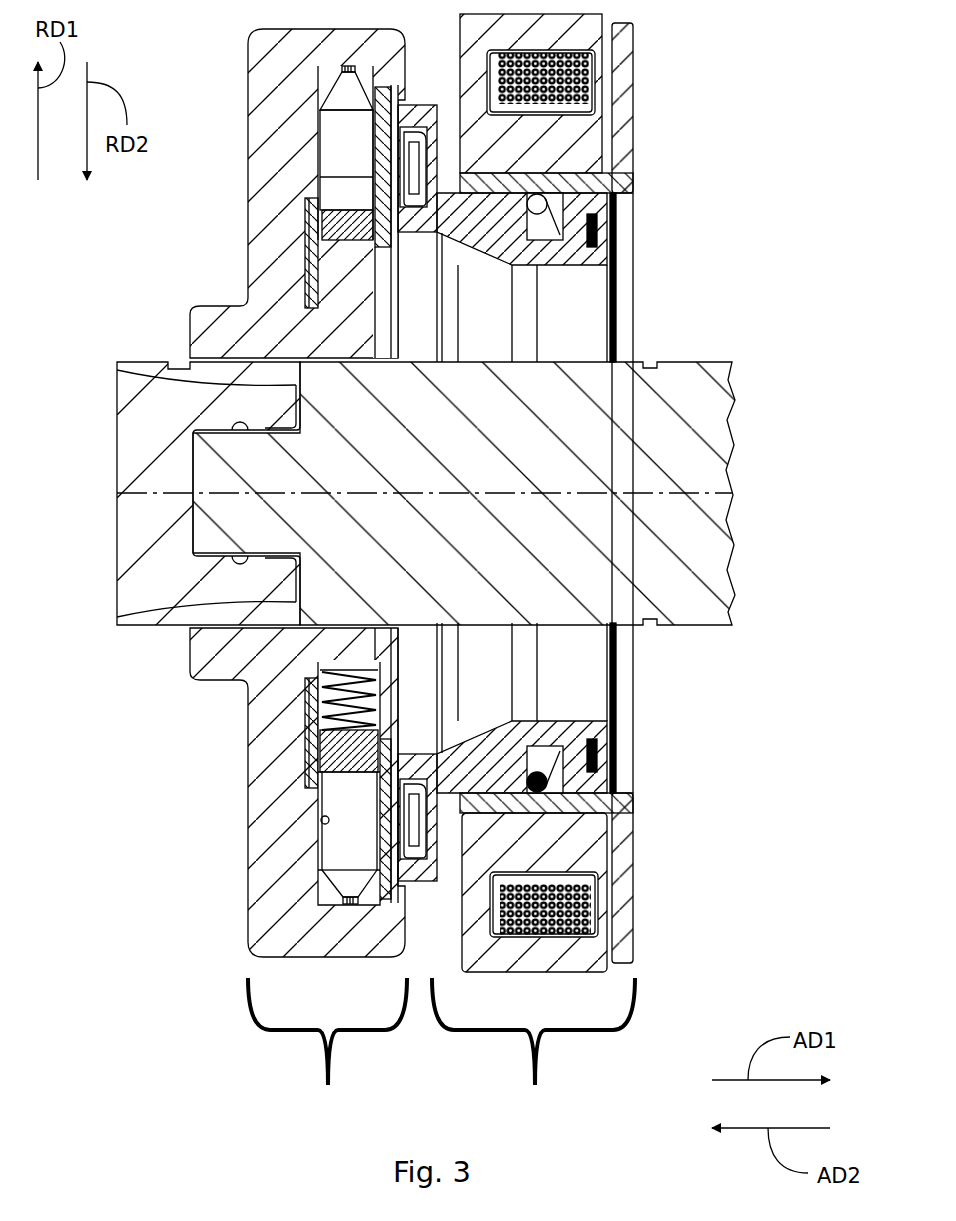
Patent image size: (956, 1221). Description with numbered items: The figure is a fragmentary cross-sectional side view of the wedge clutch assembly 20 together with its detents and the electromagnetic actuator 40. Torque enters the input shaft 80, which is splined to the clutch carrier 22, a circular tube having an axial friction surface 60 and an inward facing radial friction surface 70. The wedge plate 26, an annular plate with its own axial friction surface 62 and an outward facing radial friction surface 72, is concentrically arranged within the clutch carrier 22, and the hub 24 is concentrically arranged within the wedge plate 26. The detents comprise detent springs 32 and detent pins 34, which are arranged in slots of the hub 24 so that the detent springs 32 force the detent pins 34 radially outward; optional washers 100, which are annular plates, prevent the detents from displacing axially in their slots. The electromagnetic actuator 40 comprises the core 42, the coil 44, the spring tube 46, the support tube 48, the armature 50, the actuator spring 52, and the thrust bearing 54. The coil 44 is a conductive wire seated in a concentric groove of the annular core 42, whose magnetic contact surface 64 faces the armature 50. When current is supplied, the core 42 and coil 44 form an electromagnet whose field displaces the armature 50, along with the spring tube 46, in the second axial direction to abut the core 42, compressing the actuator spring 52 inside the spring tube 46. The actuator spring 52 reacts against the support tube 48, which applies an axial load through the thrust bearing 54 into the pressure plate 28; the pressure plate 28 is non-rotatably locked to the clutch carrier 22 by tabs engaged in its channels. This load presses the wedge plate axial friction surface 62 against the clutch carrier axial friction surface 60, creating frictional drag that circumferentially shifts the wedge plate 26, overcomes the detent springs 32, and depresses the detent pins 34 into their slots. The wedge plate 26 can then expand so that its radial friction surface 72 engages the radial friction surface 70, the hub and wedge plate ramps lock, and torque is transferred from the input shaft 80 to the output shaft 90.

The wedge clutch assembly 20 is at (259, 577).
The clutch carrier 22 is at (275, 735).
The hub 24 is at (316, 660).
The wedge plate 26 is at (322, 873).
The pressure plate 28 is at (380, 898).
The detent springs 32 is at (332, 717).
The detent pins 34 is at (337, 758).
The electromagnetic actuator 40 is at (628, 569).
The core 42 is at (588, 953).
The coil 44 is at (593, 908).
The spring tube 46 is at (577, 778).
The support tube 48 is at (573, 730).
The armature 50 is at (638, 865).
The actuator spring 52 is at (552, 756).
The thrust bearing 54 is at (425, 825).
The axial friction surface 60 is at (281, 835).
The axial friction surface 62 is at (330, 862).
The magnetic contact surface 64 is at (610, 837).
The radial friction surface 70 is at (343, 73).
The radial friction surface 72 is at (337, 97).
The input shaft 80 is at (140, 447).
The output shaft 90 is at (690, 405).
The washers 100 is at (378, 270).